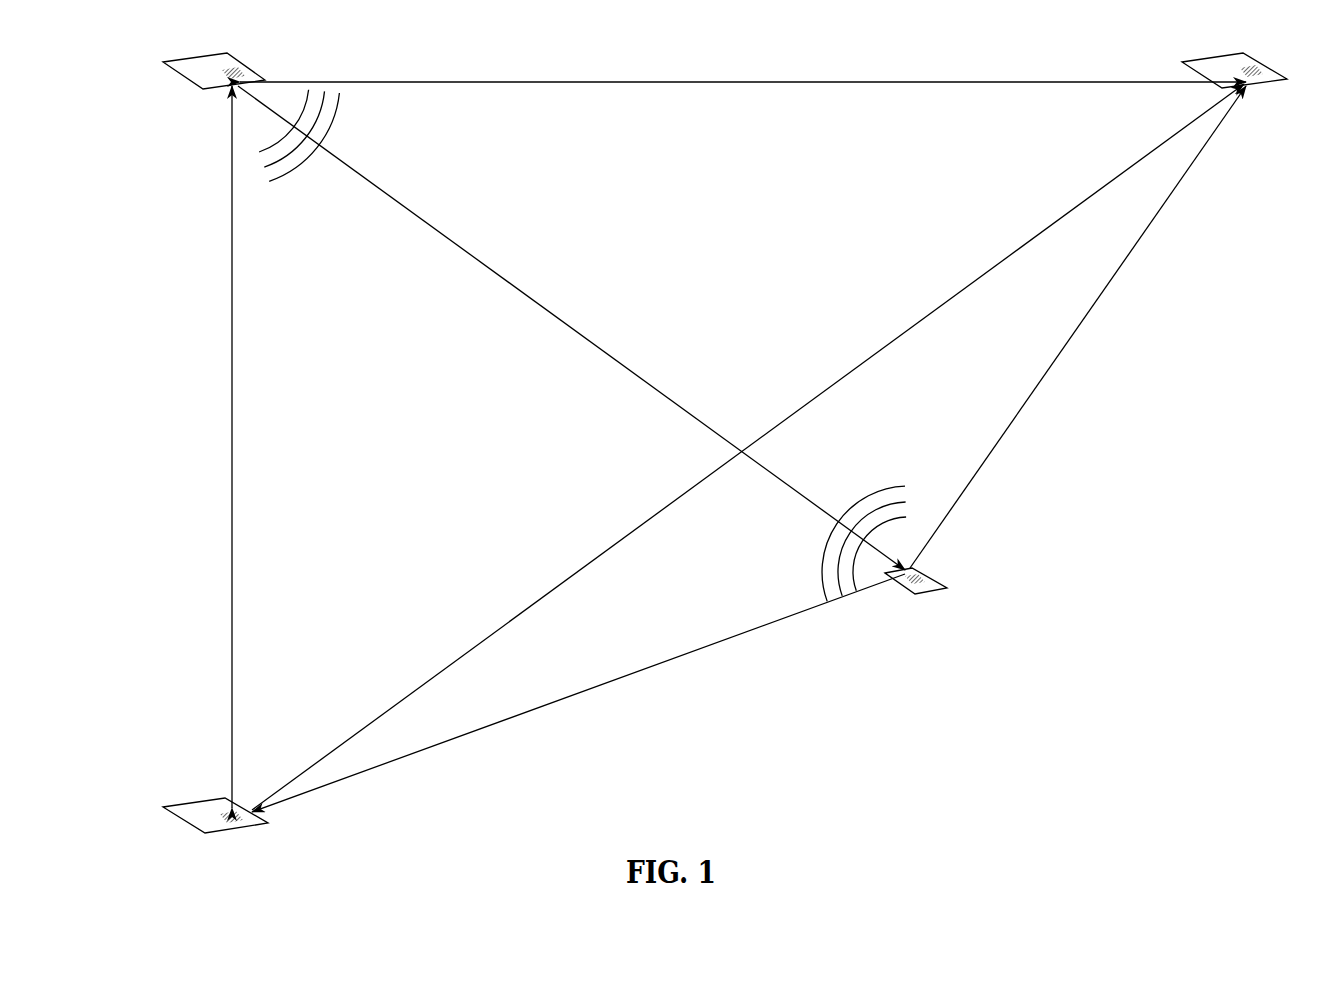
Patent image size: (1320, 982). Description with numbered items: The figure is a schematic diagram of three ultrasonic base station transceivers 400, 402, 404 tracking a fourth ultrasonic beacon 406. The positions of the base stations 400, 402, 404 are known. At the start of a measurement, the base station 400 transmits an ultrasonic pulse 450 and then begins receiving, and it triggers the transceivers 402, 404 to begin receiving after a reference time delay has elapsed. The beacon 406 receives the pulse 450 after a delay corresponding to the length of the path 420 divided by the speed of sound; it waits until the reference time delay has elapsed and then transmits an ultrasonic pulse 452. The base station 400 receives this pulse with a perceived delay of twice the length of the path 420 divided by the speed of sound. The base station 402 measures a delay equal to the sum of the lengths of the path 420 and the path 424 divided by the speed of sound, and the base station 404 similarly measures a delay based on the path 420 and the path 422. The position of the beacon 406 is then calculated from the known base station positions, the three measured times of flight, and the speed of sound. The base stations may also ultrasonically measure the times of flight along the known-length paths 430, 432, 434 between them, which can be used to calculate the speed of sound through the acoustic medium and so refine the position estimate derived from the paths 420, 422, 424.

The ultrasonic base station 400 is at (248, 58).
The ultrasonic base station 402 is at (1258, 56).
The ultrasonic base station 404 is at (225, 828).
The ultrasonic beacon 406 is at (935, 596).
The path 420 is at (612, 368).
The path 422 is at (783, 617).
The path 424 is at (992, 445).
The path 430 is at (613, 84).
The path 432 is at (228, 564).
The path 434 is at (540, 598).
The ultrasonic pulse 450 is at (305, 185).
The ultrasonic pulse 452 is at (820, 562).